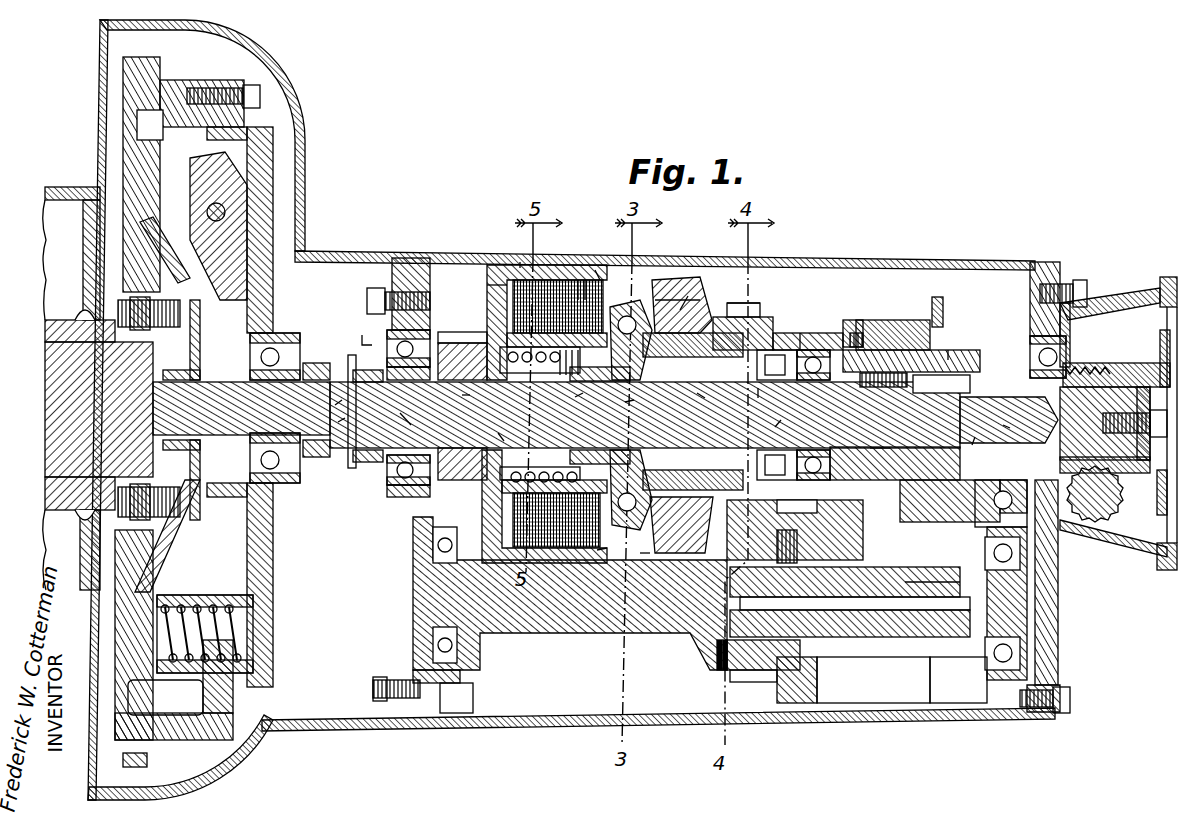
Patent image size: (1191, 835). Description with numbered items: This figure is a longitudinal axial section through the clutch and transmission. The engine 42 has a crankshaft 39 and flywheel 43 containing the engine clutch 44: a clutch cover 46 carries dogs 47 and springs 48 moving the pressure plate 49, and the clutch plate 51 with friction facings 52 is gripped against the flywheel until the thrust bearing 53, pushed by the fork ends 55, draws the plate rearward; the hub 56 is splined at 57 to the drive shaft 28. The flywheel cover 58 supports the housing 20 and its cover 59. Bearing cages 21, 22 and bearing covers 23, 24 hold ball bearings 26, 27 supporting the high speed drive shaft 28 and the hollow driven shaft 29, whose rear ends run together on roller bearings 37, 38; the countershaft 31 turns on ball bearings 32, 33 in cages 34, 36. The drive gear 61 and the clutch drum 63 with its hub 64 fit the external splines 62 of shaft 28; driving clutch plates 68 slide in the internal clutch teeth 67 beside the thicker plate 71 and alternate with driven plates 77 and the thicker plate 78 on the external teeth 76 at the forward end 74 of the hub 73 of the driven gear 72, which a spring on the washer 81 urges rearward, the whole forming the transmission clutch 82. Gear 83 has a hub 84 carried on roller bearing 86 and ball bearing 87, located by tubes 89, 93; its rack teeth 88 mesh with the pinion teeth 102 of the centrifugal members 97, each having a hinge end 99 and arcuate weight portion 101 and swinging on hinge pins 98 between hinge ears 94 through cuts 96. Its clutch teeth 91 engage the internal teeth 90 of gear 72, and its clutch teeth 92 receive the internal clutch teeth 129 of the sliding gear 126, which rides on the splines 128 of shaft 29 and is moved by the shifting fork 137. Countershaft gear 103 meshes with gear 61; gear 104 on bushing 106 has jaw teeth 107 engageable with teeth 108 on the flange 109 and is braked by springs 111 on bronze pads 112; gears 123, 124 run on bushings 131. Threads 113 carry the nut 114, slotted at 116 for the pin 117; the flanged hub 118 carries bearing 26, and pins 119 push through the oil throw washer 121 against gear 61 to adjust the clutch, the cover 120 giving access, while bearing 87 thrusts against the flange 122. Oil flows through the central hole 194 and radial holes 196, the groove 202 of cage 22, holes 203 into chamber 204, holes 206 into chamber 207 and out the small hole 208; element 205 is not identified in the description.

The housing 20 is at (534, 731).
The ball bearing cage 21 is at (428, 335).
The ball bearing cage 22 is at (1050, 284).
The bearing cover 23 is at (395, 300).
The bearing cover 24 is at (1080, 281).
The ball bearing 26 is at (365, 470).
The ball bearing 27 is at (1067, 354).
The high speed drive shaft 28 is at (315, 364).
The low speed driven shaft 29 is at (1000, 357).
The countershaft 31 is at (580, 628).
The ball bearing 32 is at (433, 548).
The ball bearing 33 is at (1030, 553).
The bearing cage 34 is at (418, 603).
The bearing cage 36 is at (1038, 604).
The roller bearing 37 is at (888, 450).
The roller bearing 38 is at (1018, 430).
The crankshaft 39 is at (45, 425).
The engine 42 is at (68, 187).
The flywheel 43 is at (137, 62).
The engine clutch 44 is at (200, 578).
The clutch cover 46 is at (252, 133).
The dogs 47 is at (200, 176).
The springs 48 is at (207, 606).
The pressure plate 49 is at (170, 252).
The clutch plate 51 is at (195, 345).
The friction facings 52 is at (134, 682).
The thrust bearing 53 is at (262, 461).
The fork ends 55 is at (325, 462).
The hub 56 is at (192, 476).
The spline 57 is at (255, 365).
The flywheel cover 58 is at (261, 60).
The housing cover 59 is at (520, 262).
The drive gear 61 is at (440, 326).
The external splines 62 is at (479, 392).
The clutch drum 63 is at (487, 268).
The clutch drum hub 64 is at (487, 430).
The internal clutch teeth 67 is at (487, 285).
The driving clutch plates 68 is at (550, 280).
The thicker driving clutch plate 71 is at (505, 308).
The driven gear 72 is at (731, 317).
The driven gear hub 73 is at (710, 333).
The forward end of hub 74 is at (470, 372).
The external clutch teeth 76 is at (500, 335).
The driven clutch plates 77 is at (585, 280).
The thicker driven clutch plate 78 is at (595, 270).
The washer 81 is at (585, 417).
The transmission clutch 82 is at (628, 305).
The manual driving gear 83 is at (808, 333).
The hub 84 is at (713, 398).
The roller bearing 86 is at (618, 398).
The combined radial and end thrust ball bearing 87 is at (823, 406).
The rack teeth 88 is at (625, 440).
The thin walled tube 89 is at (565, 398).
The internal clutch teeth 90 is at (756, 317).
The clutch teeth 91 is at (778, 333).
The clutch teeth 92 is at (853, 320).
The thin walled tube 93 is at (760, 401).
The hinge ears 94 is at (597, 550).
The cuts 96 is at (645, 520).
The centrifugal members 97 is at (636, 552).
The hinge pins 98 is at (626, 513).
The hinge end 99 is at (670, 290).
The arcuate weight portion 101 is at (688, 296).
The pinion teeth 102 is at (655, 312).
The countershaft gear 103 is at (465, 705).
The gear 104 is at (767, 683).
The bronze bushing 106 is at (757, 645).
The jaw clutch teeth 107 is at (733, 675).
The clutch teeth 108 is at (720, 672).
The integral flange 109 is at (705, 655).
The springs 111 is at (810, 530).
The bronze pads 112 is at (787, 547).
The threads 113 is at (330, 418).
The nut 114 is at (375, 372).
The slot 116 is at (350, 470).
The pin 117 is at (325, 402).
The flanged hub 118 is at (605, 415).
The small pins 119 is at (420, 427).
The removable cover 120 is at (362, 252).
The oil throw washer 121 is at (368, 338).
The flange 122 is at (830, 392).
The first manual countershaft gear 123 is at (817, 697).
The second manual countershaft gear 124 is at (927, 695).
The sliding high and low gear 126 is at (898, 320).
The external splines 128 is at (948, 350).
The internal clutch teeth 129 is at (852, 335).
The bronze bushings 131 is at (910, 583).
The shifting fork 137 is at (938, 300).
The central hole 194 is at (920, 610).
The radial holes 196 is at (745, 607).
The groove 202 is at (1000, 503).
The holes 203 is at (971, 431).
The chamber 204 is at (916, 393).
The bearing cage 205 is at (754, 469).
The holes 206 is at (860, 445).
The chamber 207 is at (775, 432).
The small hole 208 is at (776, 365).